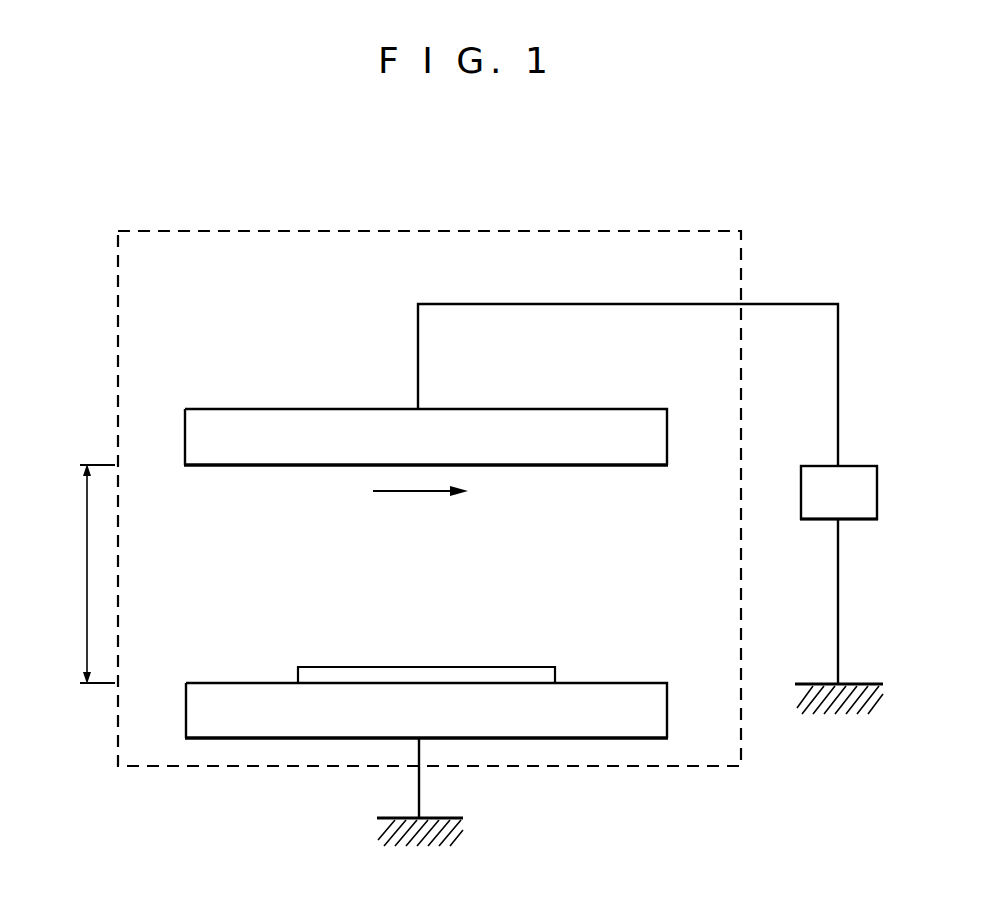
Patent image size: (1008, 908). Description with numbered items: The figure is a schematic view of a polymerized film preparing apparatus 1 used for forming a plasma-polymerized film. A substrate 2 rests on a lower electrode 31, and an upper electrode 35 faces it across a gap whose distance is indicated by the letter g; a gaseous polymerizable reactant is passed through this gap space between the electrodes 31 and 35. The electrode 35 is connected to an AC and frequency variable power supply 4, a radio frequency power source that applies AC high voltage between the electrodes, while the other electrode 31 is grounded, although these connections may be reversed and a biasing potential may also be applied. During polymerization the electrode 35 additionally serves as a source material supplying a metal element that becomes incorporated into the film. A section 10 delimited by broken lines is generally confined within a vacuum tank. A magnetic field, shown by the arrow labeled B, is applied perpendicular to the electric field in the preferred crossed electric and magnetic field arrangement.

The polymerized film preparing apparatus 1 is at (471, 471).
The section delimited by broken lines 10 is at (189, 224).
The electrode 35 is at (204, 410).
The electrode 31 is at (271, 728).
The substrate 2 is at (531, 676).
The AC and frequency variable power supply 4 is at (857, 466).